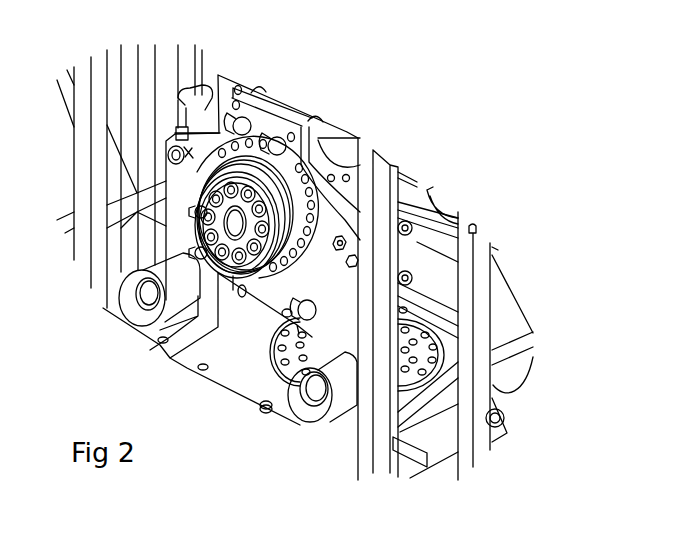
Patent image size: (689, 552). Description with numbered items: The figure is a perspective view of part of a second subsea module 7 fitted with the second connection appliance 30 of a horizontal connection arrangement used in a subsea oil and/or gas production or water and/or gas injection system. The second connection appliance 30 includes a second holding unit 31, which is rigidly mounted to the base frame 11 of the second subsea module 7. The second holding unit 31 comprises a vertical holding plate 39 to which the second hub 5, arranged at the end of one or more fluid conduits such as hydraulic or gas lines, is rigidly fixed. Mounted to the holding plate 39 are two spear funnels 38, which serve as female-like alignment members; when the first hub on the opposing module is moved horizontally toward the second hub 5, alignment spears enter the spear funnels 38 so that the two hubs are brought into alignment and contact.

The second hub 5 is at (289, 259).
The second subsea module 7 is at (445, 193).
The base frame 11 is at (384, 166).
The second connection appliance 30 is at (258, 314).
The second holding unit 31 is at (289, 107).
The spear funnels 38 is at (150, 312).
The vertical holding plate 39 is at (241, 92).